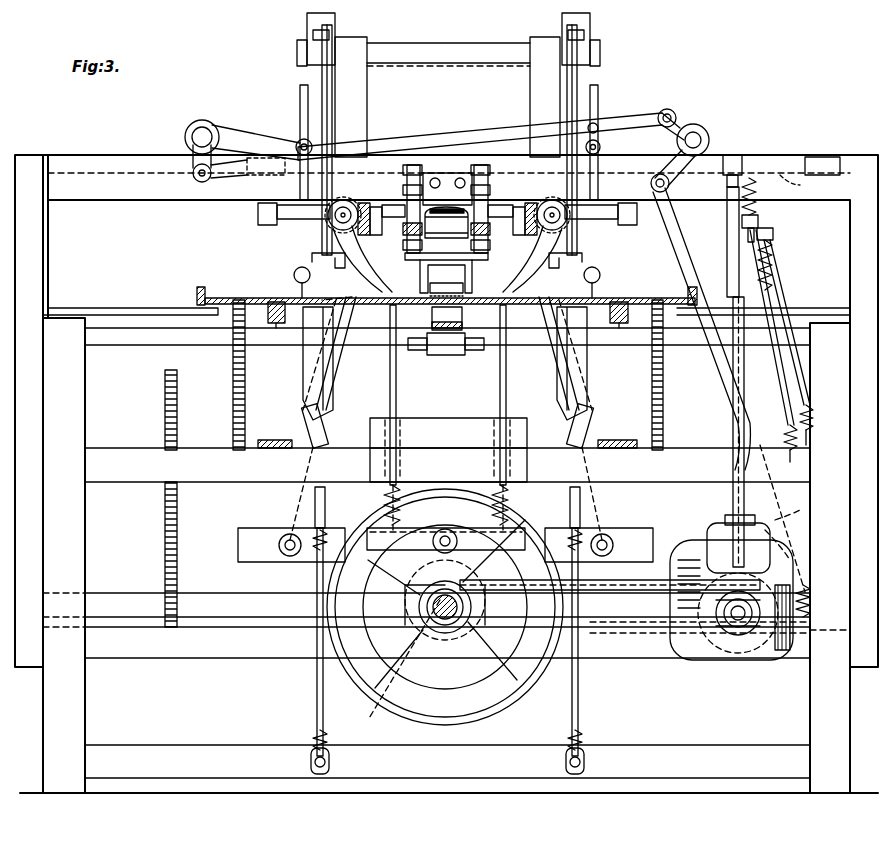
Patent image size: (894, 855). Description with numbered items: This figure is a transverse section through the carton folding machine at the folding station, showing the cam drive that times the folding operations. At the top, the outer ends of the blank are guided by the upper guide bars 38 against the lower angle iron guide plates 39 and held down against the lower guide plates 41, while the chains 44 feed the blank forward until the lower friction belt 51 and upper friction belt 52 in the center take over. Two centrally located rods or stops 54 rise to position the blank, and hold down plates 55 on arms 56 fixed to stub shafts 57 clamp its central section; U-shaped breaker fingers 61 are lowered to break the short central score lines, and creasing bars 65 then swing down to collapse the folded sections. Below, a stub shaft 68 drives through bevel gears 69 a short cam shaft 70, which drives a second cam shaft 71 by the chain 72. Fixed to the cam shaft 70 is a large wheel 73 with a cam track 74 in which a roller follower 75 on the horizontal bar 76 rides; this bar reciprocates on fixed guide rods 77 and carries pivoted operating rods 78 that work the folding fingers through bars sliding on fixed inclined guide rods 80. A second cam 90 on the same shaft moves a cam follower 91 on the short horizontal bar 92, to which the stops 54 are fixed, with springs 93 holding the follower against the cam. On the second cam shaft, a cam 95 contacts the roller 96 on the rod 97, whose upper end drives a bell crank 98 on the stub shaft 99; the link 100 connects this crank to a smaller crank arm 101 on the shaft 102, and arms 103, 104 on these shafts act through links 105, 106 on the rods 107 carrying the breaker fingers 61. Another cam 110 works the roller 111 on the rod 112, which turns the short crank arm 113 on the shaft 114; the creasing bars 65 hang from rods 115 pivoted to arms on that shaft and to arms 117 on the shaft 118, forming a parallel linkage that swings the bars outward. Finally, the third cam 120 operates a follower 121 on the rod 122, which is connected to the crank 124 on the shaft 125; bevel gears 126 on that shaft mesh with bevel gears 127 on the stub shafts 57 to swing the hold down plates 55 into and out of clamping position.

The upper guide bars 38 is at (212, 295).
The lower angle iron guide plates 39 is at (196, 295).
The lower guide plates 41 is at (276, 325).
The chains 44 is at (232, 372).
The lower friction belt 51 is at (440, 330).
The upper friction belt 52 is at (446, 283).
The rods or stops 54 is at (397, 393).
The hold down plates 55 is at (447, 272).
The arms 56 is at (370, 258).
The stub shafts 57 is at (343, 200).
The U-shaped breaker fingers 61 is at (296, 278).
The creasing bars 65 is at (447, 282).
The stub shaft 68 is at (192, 592).
The bevel gears 69 is at (366, 710).
The cam shaft 70 is at (443, 620).
The second cam shaft 71 is at (736, 625).
The chain 72 is at (595, 590).
The large wheel 73 is at (495, 706).
The cam track 74 is at (470, 700).
The roller follower 75 is at (478, 548).
The horizontal bar 76 is at (238, 545).
The fixed guide rods 77 is at (316, 690).
The operating rods 78 is at (290, 533).
The fixed inclined guide rods 80 is at (350, 370).
The second cam 90 is at (500, 598).
The cam follower 91 is at (435, 535).
The short horizontal bar 92 is at (370, 533).
The springs 93 is at (510, 505).
The cam 95 is at (745, 655).
The roller or follower 96 is at (768, 540).
The rod 97 is at (744, 500).
The bell crank 98 is at (668, 135).
The stub shaft 99 is at (695, 140).
The link 100 is at (448, 135).
The smaller crank arm 101 is at (193, 165).
The shaft 102 is at (200, 135).
The arm 103 is at (660, 110).
The arm 104 is at (232, 128).
The link 105 is at (597, 126).
The link 106 is at (300, 138).
The rods 107 is at (302, 92).
The cam 110 is at (672, 610).
The follower or roller 111 is at (707, 540).
The rod 112 is at (712, 270).
The short crank arm 113 is at (742, 160).
The shaft 114 is at (800, 185).
The rods 115 is at (332, 90).
The arms 117 is at (300, 36).
The shaft 118 is at (442, 55).
The third cam 120 is at (785, 652).
The follower 121 is at (800, 510).
The rod 122 is at (775, 285).
The crank 124 is at (760, 228).
The shaft 125 is at (705, 220).
The bevel gears 126 is at (364, 228).
The bevel gears 127 is at (358, 205).